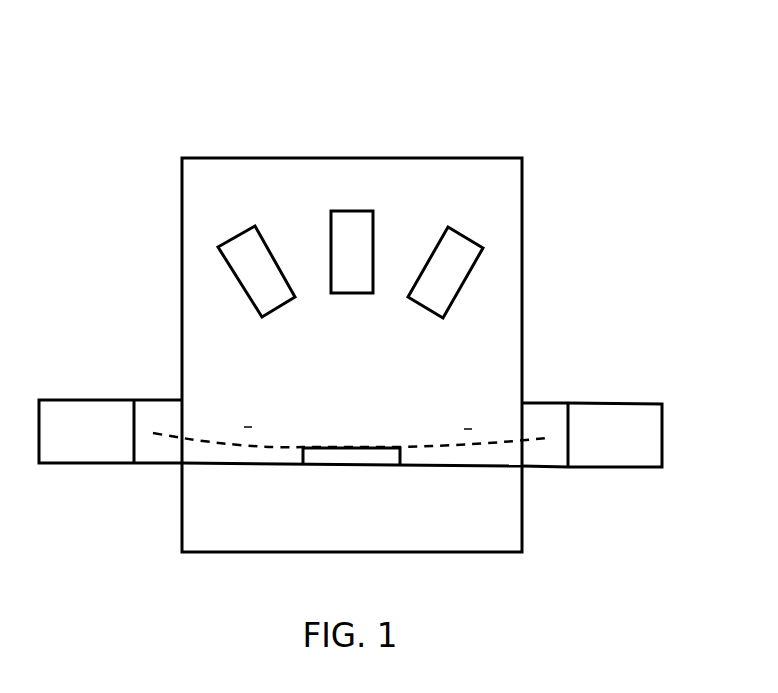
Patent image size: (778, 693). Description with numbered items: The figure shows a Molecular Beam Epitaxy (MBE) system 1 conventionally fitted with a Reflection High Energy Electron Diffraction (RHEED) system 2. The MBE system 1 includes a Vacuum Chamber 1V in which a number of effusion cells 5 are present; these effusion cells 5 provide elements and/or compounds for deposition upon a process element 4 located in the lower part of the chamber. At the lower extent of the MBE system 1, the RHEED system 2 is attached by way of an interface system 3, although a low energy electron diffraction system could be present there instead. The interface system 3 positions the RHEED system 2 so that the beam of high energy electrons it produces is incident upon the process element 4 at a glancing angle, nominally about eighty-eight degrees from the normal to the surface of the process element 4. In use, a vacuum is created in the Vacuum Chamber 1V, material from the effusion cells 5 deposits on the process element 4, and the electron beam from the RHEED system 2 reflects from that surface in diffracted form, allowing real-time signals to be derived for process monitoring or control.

The Molecular Beam Epitaxy (MBE) system 1 is at (363, 283).
The Vacuum Chamber 1V is at (673, 23).
The Reflection High Energy Electron Diffraction (RHEED) system 2 is at (350, 433).
The interface system 3 is at (157, 390).
The process element 4 is at (372, 438).
The effusion cells 5 is at (350, 264).